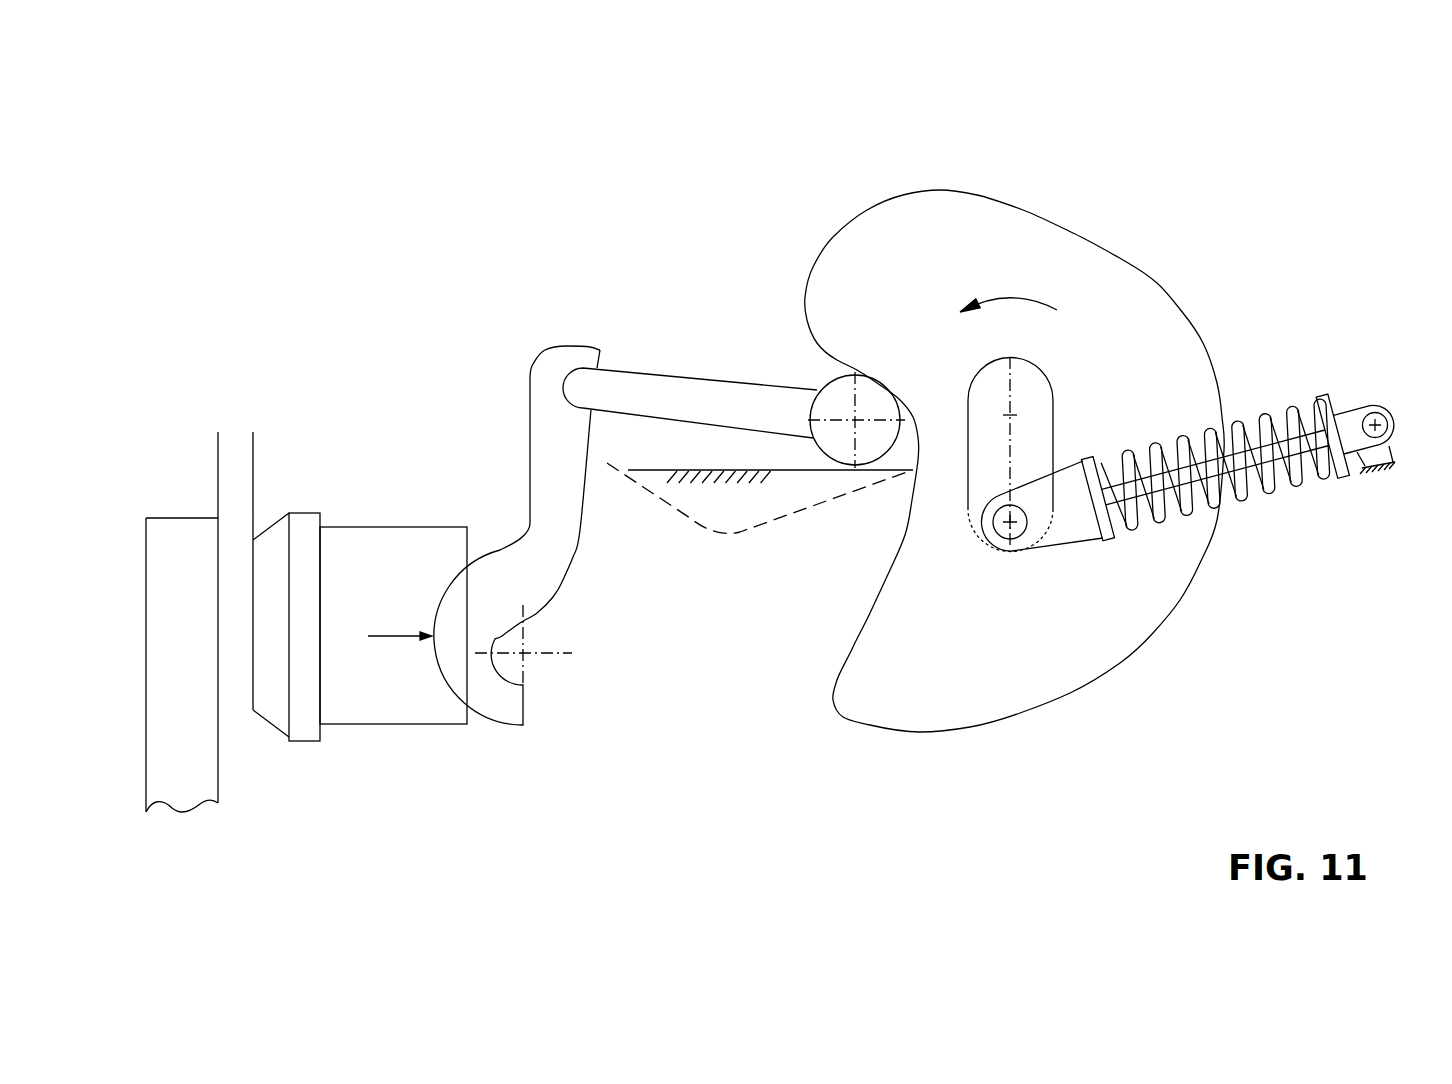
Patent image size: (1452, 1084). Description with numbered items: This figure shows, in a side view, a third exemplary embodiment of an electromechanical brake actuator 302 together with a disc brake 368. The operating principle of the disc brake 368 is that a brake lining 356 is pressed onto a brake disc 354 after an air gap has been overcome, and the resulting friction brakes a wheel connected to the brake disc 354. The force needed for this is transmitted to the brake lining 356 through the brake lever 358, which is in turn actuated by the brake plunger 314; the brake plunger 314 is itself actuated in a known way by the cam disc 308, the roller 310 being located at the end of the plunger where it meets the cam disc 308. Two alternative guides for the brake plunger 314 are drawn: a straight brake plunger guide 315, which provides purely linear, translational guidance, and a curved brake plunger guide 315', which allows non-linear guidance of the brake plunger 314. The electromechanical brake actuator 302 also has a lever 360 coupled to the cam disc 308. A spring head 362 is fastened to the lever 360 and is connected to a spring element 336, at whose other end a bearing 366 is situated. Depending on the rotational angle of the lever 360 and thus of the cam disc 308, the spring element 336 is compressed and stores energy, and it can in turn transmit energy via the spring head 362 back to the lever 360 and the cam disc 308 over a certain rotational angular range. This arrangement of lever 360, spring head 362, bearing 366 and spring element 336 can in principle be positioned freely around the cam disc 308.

The electromechanical brake actuator 302 is at (905, 760).
The cam disc 308 is at (997, 228).
The roller 310 is at (830, 438).
The brake plunger 314 is at (684, 398).
The straight brake plunger guide 315 is at (770, 394).
The curved brake plunger guide 315' is at (757, 564).
The spring element 336 is at (1272, 495).
The brake disc 354 is at (180, 538).
The brake lining 356 is at (267, 553).
The brake lever 358 is at (502, 702).
The lever 360 is at (1038, 393).
The spring head 362 is at (1067, 513).
The bearing 366 is at (1393, 440).
The disc brake 368 is at (314, 269).